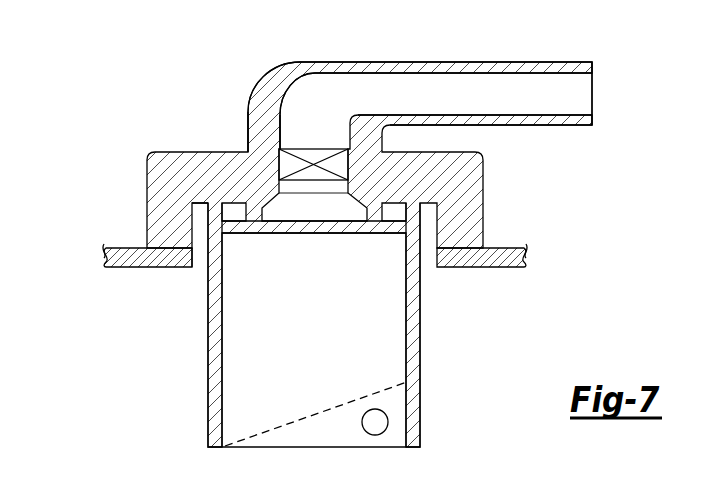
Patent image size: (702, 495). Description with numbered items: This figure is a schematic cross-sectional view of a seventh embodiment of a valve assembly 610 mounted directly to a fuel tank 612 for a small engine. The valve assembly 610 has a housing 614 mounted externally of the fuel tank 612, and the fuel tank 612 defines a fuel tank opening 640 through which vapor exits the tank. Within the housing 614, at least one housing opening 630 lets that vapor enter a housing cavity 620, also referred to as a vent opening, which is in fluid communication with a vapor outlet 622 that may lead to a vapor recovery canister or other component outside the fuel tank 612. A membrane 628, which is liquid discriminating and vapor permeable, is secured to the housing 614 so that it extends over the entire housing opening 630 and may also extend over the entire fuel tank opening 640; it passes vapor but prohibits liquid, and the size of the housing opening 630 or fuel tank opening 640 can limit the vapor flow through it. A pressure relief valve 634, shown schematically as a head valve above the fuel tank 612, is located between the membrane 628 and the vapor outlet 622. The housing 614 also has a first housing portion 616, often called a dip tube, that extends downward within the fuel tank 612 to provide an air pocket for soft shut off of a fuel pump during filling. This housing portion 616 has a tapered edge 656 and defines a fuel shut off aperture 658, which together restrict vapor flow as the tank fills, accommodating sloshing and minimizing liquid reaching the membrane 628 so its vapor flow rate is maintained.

The valve assembly 610 is at (341, 247).
The fuel tank 612 is at (125, 262).
The housing 614 is at (147, 160).
The housing portion 616 is at (215, 376).
The housing cavity 620 is at (332, 82).
The vapor outlet 622 is at (582, 97).
The membrane 628 is at (353, 230).
The housing opening 630 is at (286, 105).
The pressure relief valve 634 is at (301, 134).
The fuel tank opening 640 is at (223, 259).
The tapered edge 656 is at (284, 424).
The fuel shut off aperture 658 is at (388, 422).